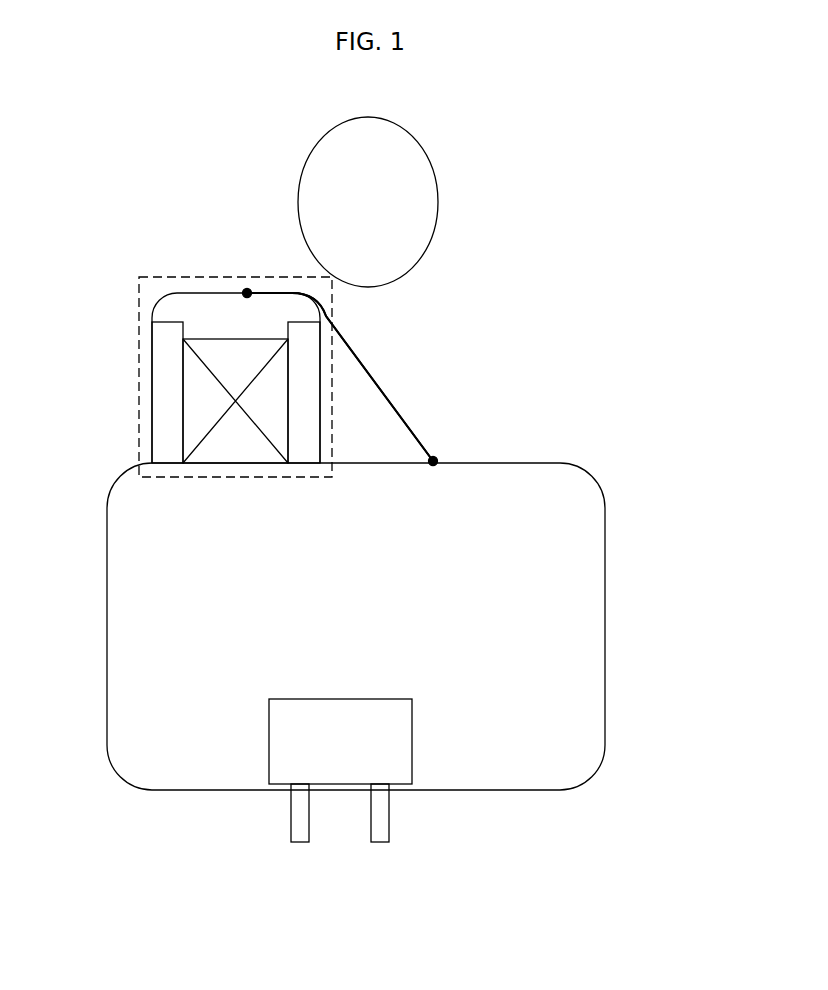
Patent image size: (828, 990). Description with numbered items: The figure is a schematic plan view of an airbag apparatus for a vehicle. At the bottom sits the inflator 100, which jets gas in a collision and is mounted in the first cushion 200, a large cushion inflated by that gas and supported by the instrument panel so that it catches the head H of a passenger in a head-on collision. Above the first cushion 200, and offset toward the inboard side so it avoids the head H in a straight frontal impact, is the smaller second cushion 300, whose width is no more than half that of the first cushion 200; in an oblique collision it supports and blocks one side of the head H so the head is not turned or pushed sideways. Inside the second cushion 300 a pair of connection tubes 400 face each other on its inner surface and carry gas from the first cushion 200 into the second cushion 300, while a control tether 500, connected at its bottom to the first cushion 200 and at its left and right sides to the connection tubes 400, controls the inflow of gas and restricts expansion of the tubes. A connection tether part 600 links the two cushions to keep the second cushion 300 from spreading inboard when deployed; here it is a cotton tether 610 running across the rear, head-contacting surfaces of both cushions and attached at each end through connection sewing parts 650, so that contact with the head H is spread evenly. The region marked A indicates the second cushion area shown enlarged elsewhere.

The inflator 100 is at (393, 762).
The first cushion 200 is at (578, 555).
The second cushion 300 is at (152, 303).
The connection tube 400 is at (305, 423).
The control tether 500 is at (200, 380).
The connection tether part 600 is at (388, 393).
The cotton tether 610 is at (370, 372).
The connection sewing part 650 is at (245, 292).
The head H is at (428, 161).
The enlarged region A is at (262, 277).